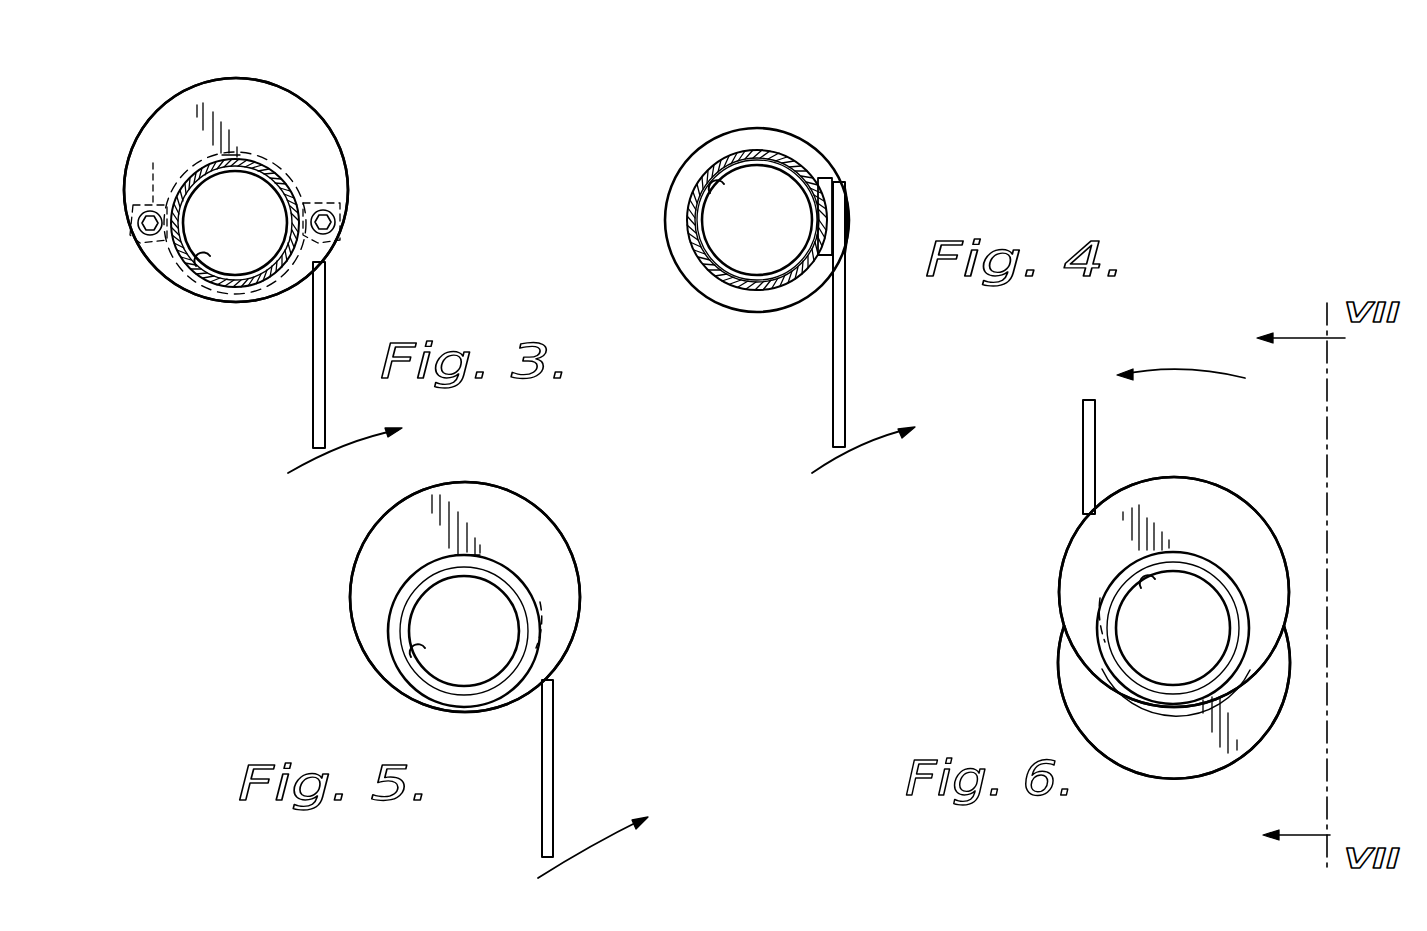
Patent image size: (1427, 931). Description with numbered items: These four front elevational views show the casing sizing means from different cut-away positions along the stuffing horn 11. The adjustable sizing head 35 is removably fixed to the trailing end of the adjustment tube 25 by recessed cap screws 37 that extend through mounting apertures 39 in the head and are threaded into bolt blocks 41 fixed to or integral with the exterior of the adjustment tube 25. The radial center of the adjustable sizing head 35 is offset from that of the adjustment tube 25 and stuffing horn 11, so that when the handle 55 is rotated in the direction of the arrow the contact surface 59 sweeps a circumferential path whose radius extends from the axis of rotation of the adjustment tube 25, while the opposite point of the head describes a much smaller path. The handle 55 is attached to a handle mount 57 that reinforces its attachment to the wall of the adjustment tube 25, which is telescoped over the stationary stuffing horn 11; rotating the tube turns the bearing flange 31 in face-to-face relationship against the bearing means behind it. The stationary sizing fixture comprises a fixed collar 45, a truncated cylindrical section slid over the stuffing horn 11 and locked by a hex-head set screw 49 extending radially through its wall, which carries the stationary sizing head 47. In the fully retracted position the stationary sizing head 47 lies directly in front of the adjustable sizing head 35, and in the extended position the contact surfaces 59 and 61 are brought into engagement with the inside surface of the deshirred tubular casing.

In FIG. 3, the stuffing horn 11 is at (283, 172).
In FIG. 4, the stuffing horn 11 is at (717, 188).
In FIG. 5, the stuffing horn 11 is at (413, 675).
In FIG. 6, the stuffing horn 11 is at (1148, 580).
In FIG. 3, the adjustment tube 25 is at (278, 163).
In FIG. 4, the adjustment tube 25 is at (720, 153).
In FIG. 4, the bearing flange 31 is at (783, 130).
In FIG. 3, the adjustable sizing head 35 is at (167, 115).
In FIG. 6, the adjustable sizing head 35 is at (1200, 765).
In FIG. 3, the recessed cap screws 37 is at (130, 213).
In FIG. 3, the mounting apertures 39 is at (140, 242).
In FIG. 3, the bolt blocks 41 is at (140, 157).
In FIG. 5, the fixed collar 45 is at (395, 610).
In FIG. 6, the fixed collar 45 is at (1107, 660).
In FIG. 5, the stationary sizing head 47 is at (382, 532).
In FIG. 6, the stationary sizing head 47 is at (1225, 510).
In FIG. 5, the hex-head set screw 49 is at (540, 600).
In FIG. 6, the hex-head set screw 49 is at (1102, 592).
In FIG. 3, the handle 55 is at (313, 378).
In FIG. 4, the handle 55 is at (833, 368).
In FIG. 5, the handle 55 is at (553, 758).
In FIG. 6, the handle 55 is at (1083, 445).
In FIG. 4, the handle mount 57 is at (827, 178).
In FIG. 3, the contact surface 59 is at (293, 92).
In FIG. 6, the contact surface 59 is at (1140, 762).
In FIG. 5, the contact surface 61 is at (503, 485).
In FIG. 6, the contact surface 61 is at (1178, 478).